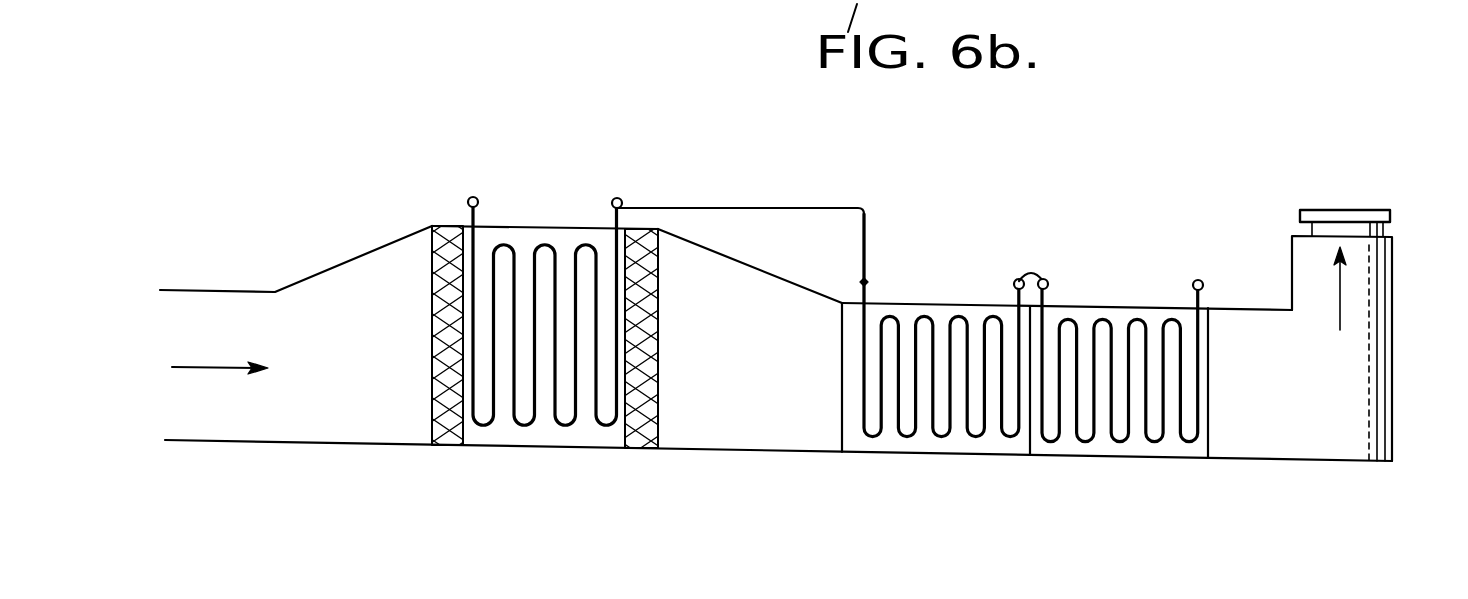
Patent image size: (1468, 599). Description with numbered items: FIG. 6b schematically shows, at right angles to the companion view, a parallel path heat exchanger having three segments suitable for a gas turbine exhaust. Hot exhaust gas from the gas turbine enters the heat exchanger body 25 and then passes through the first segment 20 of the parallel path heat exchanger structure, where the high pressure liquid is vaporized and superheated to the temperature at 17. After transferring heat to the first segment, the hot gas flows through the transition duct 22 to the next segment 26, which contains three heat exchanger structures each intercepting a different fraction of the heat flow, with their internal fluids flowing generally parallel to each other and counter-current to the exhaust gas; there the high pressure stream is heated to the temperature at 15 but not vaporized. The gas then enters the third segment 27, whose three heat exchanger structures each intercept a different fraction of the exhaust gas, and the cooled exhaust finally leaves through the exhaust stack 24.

The temperature point 15 is at (745, 207).
The temperature point 17 is at (207, 368).
The segment 20 is at (553, 443).
The transition duct 22 is at (747, 450).
The exhaust stack 24 is at (1378, 281).
The heat exchanger body 25 is at (350, 400).
The segment 26 is at (957, 452).
The segment 27 is at (1138, 455).